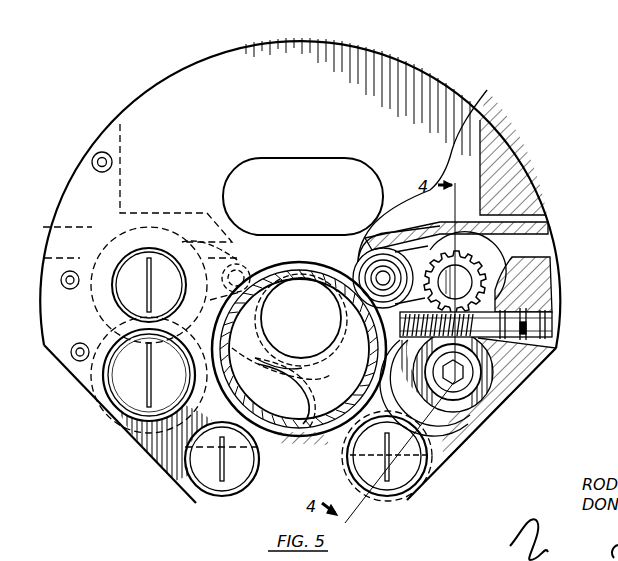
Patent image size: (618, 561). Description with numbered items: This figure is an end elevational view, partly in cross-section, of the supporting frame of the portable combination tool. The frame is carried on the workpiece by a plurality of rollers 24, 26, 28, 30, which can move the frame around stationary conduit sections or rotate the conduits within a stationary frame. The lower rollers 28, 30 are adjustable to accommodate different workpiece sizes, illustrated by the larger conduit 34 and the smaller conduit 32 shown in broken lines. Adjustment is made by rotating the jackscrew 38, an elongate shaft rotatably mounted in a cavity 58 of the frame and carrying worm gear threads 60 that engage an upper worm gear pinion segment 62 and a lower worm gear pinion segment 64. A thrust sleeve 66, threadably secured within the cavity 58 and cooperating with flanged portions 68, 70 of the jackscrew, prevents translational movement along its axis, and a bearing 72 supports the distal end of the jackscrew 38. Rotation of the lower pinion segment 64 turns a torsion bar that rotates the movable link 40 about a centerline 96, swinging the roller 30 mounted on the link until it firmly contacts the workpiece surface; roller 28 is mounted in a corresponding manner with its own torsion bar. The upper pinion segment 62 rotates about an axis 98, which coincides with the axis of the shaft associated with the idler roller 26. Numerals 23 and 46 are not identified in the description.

The base plate 23 is at (412, 72).
The web 46 is at (462, 115).
The roller 24 is at (244, 262).
The idler roller 26 is at (360, 262).
The axis 98 is at (410, 262).
The worm gear pinion segment 62 is at (490, 262).
The jackscrew 38 is at (482, 283).
The flanged portion 68 is at (545, 283).
The flanged portion 70 is at (548, 306).
The cavity 58 is at (556, 326).
The thrust sleeve 66 is at (545, 362).
The worm gear pinion segment 64 is at (490, 382).
The centerline 96 is at (473, 437).
The worm gear threads 60 is at (311, 320).
The bearing 72 is at (378, 351).
The conduit 32 is at (300, 360).
The conduit 34 is at (313, 417).
The roller 30 is at (346, 452).
The roller 28 is at (285, 470).
The movable link 40 is at (433, 473).